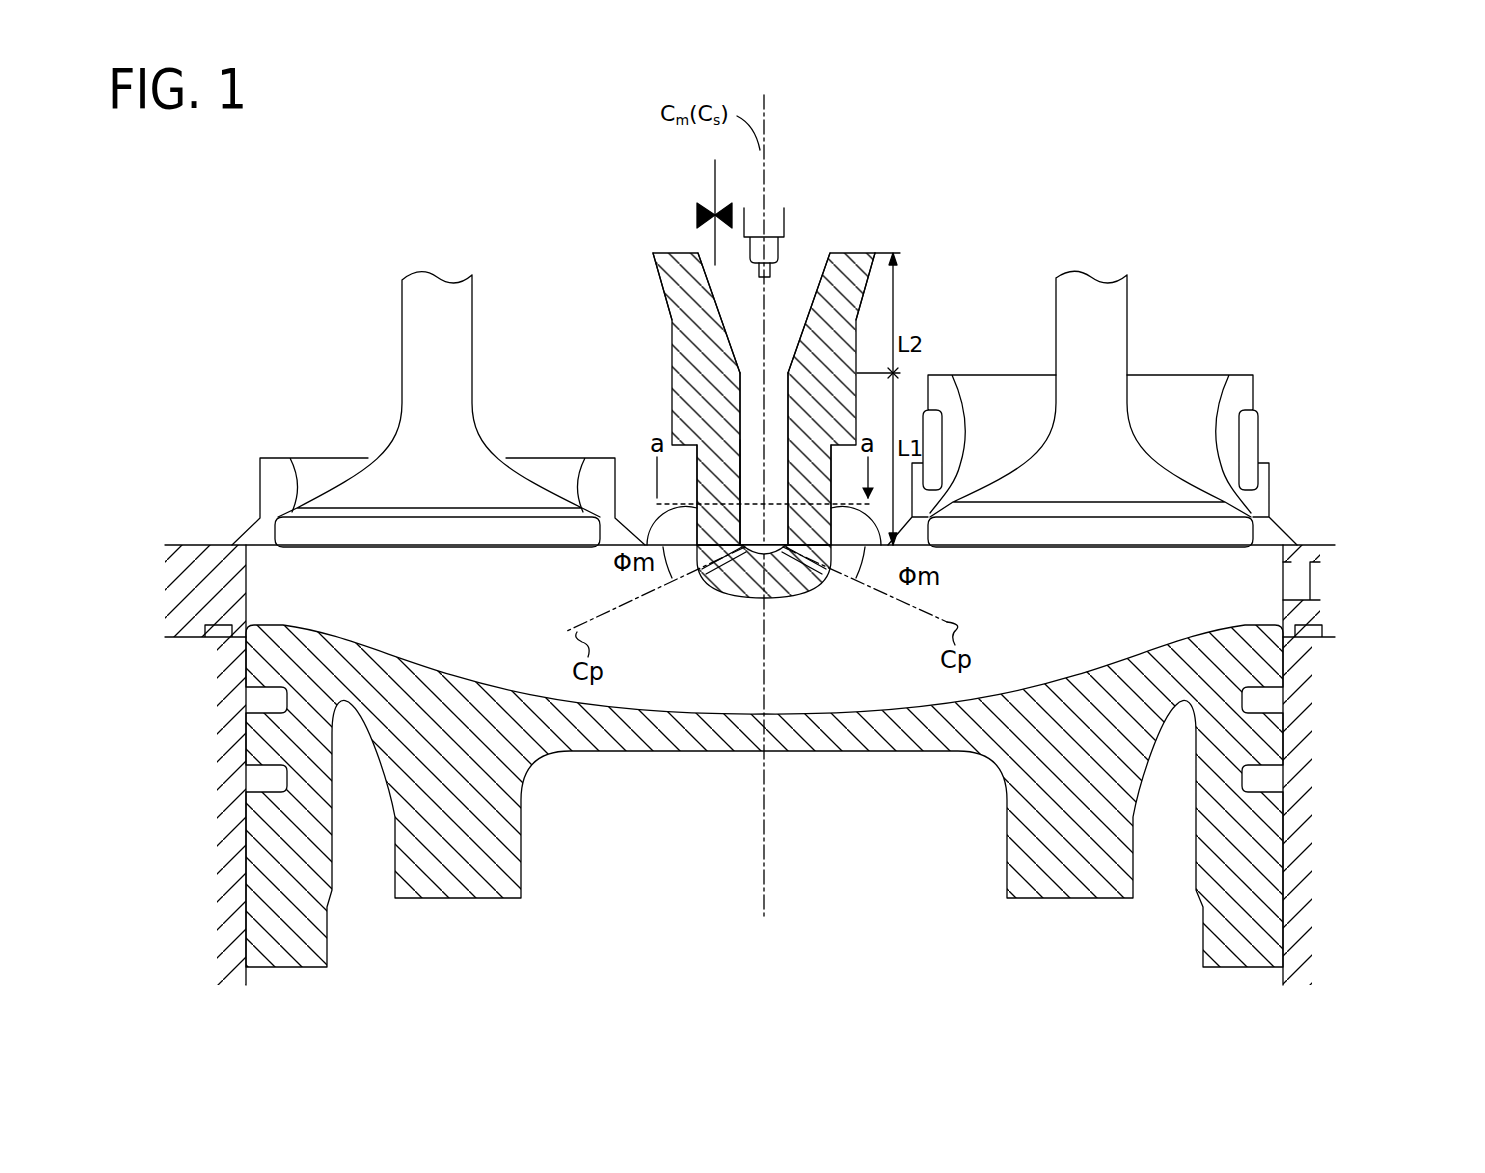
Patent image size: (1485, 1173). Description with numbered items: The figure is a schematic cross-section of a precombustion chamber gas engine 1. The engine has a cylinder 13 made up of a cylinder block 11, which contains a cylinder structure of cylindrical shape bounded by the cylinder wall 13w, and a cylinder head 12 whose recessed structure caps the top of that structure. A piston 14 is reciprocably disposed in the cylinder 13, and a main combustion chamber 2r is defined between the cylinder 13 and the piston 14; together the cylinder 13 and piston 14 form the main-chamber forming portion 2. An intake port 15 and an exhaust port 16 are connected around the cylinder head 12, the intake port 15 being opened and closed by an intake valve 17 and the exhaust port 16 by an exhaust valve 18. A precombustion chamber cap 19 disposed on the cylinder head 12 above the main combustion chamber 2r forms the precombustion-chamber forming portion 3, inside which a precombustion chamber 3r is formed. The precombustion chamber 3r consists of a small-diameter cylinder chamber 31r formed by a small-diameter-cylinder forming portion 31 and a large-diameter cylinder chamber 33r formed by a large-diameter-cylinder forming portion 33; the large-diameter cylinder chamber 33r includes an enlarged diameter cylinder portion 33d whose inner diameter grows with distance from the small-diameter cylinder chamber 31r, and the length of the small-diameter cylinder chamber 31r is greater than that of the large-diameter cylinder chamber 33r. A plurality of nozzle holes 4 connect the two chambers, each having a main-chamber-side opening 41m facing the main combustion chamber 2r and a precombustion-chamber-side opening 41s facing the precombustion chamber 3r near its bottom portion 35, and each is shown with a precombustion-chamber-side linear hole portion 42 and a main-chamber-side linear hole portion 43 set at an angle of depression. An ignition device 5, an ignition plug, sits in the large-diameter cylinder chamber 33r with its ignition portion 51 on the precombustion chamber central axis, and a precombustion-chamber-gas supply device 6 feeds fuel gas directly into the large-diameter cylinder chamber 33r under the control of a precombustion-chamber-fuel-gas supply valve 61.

The precombustion chamber gas engine 1 is at (180, 330).
The main-chamber forming portion 2 is at (1433, 733).
The main combustion chamber 2r is at (469, 593).
The precombustion-chamber forming portion 3 is at (1025, 240).
The precombustion chamber 3r is at (578, 322).
The nozzle hole 4 is at (756, 617).
The ignition device 5 is at (785, 215).
The precombustion-chamber-gas supply device 6 is at (715, 183).
The cylinder block 11 is at (1308, 730).
The cylinder head 12 is at (1322, 620).
The cylinder 13 is at (1388, 703).
The cylinder wall 13w is at (250, 580).
The piston 14 is at (1275, 822).
The intake port 15 is at (1240, 393).
The exhaust port 16 is at (287, 472).
The intake valve 17 is at (1108, 352).
The exhaust valve 18 is at (408, 430).
The precombustion chamber cap 19 is at (957, 208).
The small-diameter-cylinder forming portion 31 is at (805, 390).
The small-diameter cylinder chamber 31r is at (752, 483).
The large-diameter-cylinder forming portion 33 is at (837, 270).
The enlarged diameter cylinder portion 33d is at (838, 258).
The large-diameter cylinder chamber 33r is at (725, 280).
The bottom portion 35 is at (771, 560).
The main-chamber-side opening 41m is at (700, 566).
The precombustion-chamber-side opening 41s is at (738, 556).
The precombustion-chamber-side linear hole portion 42 is at (810, 588).
The main-chamber-side linear hole portion 43 is at (706, 590).
The ignition portion 51 is at (750, 280).
The precombustion-chamber-fuel-gas supply valve 61 is at (700, 225).